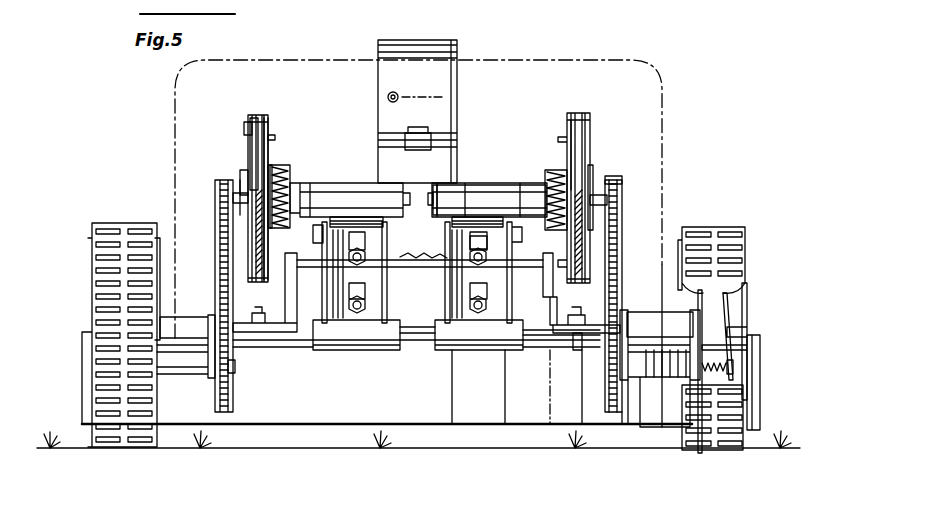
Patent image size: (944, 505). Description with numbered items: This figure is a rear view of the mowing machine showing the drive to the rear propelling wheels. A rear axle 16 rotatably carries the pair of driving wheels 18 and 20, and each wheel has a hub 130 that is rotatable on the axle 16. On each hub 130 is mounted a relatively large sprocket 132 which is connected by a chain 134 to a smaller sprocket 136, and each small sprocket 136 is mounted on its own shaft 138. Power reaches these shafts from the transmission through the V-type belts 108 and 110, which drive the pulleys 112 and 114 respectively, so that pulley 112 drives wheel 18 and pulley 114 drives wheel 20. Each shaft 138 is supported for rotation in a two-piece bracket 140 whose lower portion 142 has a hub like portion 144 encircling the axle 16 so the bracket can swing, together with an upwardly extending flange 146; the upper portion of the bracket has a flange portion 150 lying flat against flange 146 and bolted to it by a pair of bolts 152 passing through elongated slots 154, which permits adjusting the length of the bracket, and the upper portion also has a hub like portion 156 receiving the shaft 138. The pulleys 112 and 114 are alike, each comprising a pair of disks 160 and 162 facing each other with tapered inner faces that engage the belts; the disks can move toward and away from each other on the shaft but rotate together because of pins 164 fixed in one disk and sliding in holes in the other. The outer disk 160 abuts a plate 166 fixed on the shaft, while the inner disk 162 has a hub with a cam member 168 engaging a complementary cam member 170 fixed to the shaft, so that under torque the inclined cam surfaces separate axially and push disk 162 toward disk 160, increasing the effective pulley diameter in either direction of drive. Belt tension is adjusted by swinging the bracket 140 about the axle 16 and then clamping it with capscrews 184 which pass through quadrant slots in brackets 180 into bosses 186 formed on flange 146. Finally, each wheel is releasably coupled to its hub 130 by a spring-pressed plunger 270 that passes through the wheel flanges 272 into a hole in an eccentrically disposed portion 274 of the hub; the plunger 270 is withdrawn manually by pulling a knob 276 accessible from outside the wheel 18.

The axle 16 is at (530, 340).
The driving wheel 18 is at (737, 228).
The driving wheel 20 is at (106, 227).
The belt 108 is at (576, 118).
The belt 110 is at (262, 118).
The pulley 112 is at (598, 119).
The pulley 114 is at (240, 133).
The hub 130 is at (180, 320).
The sprocket 132 is at (622, 404).
The chain 134 is at (618, 260).
The sprocket 136 is at (618, 192).
The shaft 138 is at (232, 197).
The bracket 140 is at (471, 183).
The lower portion 142 is at (465, 318).
The hub like portion 144 is at (498, 348).
The flange 146 is at (460, 300).
The flange portion 150 is at (463, 217).
The bolts 152 is at (473, 296).
The elongated slots 154 is at (487, 292).
The hub like portion 156 is at (449, 190).
The disk 160 is at (248, 118).
The disk 162 is at (270, 128).
The pins 164 is at (272, 165).
The plate 166 is at (240, 172).
The cam member 168 is at (283, 170).
The cam member 170 is at (292, 185).
The brackets 180 is at (305, 262).
The capscrews 184 is at (560, 173).
The bosses 186 is at (501, 229).
The plunger 270 is at (712, 362).
The wheel flanges 272 is at (746, 265).
The eccentrically disposed portion 274 is at (703, 443).
The knob 276 is at (749, 381).